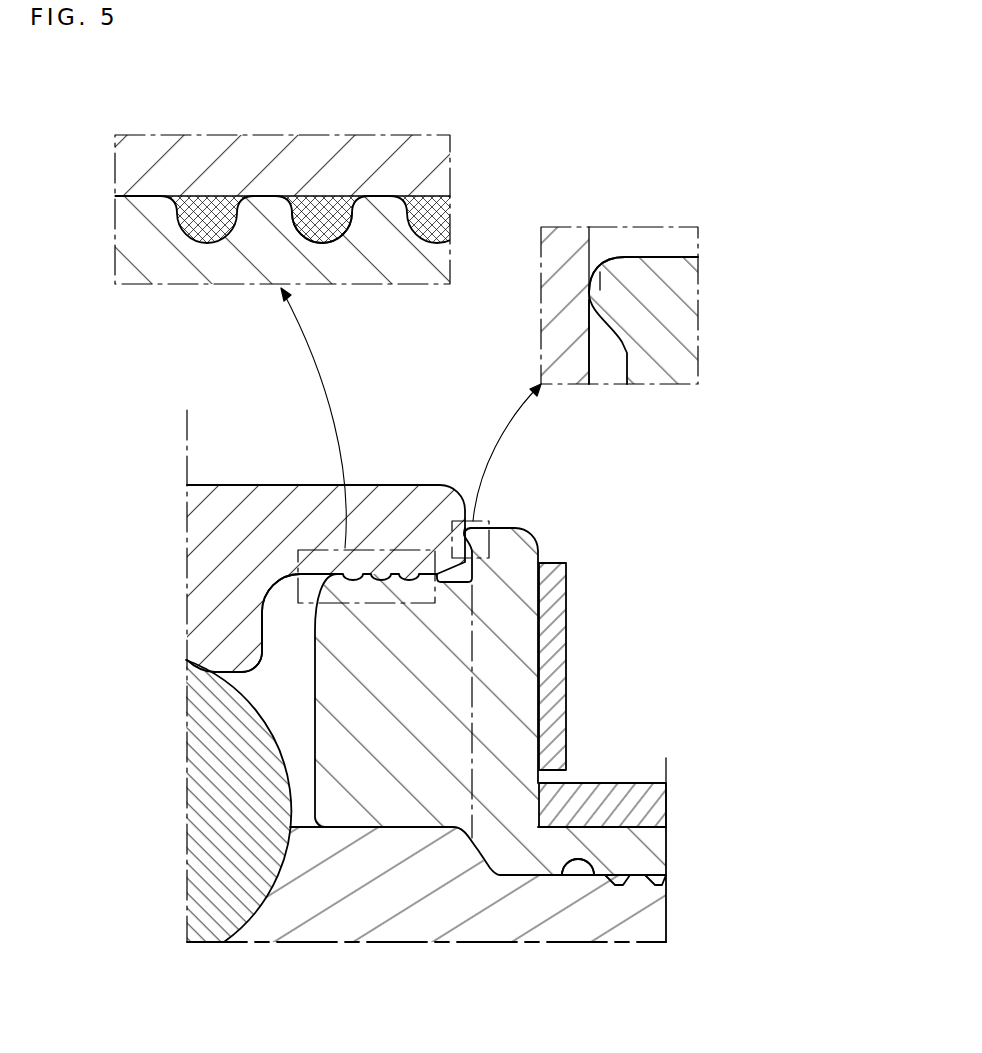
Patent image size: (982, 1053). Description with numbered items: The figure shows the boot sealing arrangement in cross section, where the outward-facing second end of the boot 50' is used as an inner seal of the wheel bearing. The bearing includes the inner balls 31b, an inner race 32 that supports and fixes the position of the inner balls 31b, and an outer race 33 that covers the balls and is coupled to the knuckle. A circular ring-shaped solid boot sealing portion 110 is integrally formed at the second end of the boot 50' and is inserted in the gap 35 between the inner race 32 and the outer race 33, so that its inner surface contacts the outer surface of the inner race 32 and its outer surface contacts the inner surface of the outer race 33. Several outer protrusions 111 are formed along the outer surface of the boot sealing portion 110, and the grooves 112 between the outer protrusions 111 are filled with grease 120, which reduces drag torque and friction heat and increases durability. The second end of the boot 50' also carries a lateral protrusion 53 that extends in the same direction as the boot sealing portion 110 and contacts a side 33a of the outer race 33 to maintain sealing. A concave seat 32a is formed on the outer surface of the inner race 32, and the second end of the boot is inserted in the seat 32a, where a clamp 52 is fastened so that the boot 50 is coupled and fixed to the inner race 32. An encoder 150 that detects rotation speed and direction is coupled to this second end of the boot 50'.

The outer race 33 is at (218, 167).
The side of the outer race 33a is at (592, 352).
The gap 35 is at (290, 633).
The inner balls 31b is at (207, 858).
The inner race 32 is at (513, 925).
The concave seat 32a is at (595, 870).
The boot 50 is at (620, 851).
The boot 50' is at (608, 566).
The clamp 52 is at (650, 805).
The lateral protrusion 53 is at (600, 270).
The boot sealing portion 110 is at (158, 263).
The outer protrusions 111 is at (152, 213).
The grooves 112 is at (347, 220).
The grease 120 is at (197, 215).
The encoder 150 is at (558, 690).